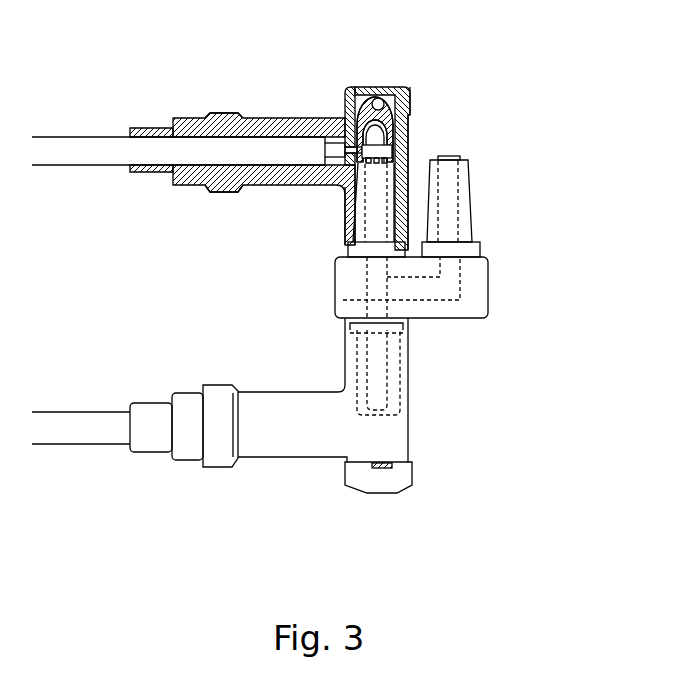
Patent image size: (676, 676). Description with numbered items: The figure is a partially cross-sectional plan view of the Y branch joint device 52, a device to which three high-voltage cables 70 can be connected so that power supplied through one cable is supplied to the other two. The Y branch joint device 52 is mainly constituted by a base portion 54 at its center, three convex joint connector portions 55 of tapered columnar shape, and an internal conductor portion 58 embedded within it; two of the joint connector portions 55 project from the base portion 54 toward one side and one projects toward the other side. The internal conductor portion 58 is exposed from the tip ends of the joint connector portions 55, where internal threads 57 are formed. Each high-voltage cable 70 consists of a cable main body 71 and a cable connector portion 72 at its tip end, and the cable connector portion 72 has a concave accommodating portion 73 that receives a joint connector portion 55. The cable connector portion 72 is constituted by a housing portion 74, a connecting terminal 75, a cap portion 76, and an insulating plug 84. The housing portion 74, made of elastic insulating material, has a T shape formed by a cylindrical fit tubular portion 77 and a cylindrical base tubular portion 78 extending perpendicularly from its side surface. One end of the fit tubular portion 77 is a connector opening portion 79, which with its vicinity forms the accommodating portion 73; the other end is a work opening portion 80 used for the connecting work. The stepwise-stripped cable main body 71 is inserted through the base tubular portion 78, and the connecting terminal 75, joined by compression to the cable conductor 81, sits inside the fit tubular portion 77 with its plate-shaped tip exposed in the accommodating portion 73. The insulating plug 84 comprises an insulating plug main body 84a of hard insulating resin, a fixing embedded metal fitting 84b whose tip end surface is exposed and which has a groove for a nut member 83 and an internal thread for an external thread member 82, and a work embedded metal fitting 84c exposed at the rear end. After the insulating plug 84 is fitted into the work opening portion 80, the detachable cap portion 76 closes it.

The Y branch joint device 52 is at (488, 272).
The base portion 54 is at (487, 297).
The joint connector portion 55 is at (468, 190).
The internal thread 57 is at (342, 203).
The internal conductor portion 58 is at (334, 304).
The high-voltage cable 70 is at (70, 136).
The cable main body 71 is at (91, 145).
The cable connector portion 72 is at (192, 117).
The accommodating portion 73 is at (345, 222).
The housing portion 74 is at (240, 117).
The connecting terminal 75 is at (343, 118).
The cap portion 76 is at (400, 91).
The fit tubular portion 77 is at (409, 97).
The base tubular portion 78 is at (150, 127).
The connector opening portion 79 is at (347, 262).
The work opening portion 80 is at (390, 86).
The cable conductor 81 is at (343, 131).
The external thread member 82 is at (377, 86).
The nut member 83 is at (357, 98).
The insulating plug 84 is at (362, 88).
The insulating plug main body 84a is at (411, 112).
The fixing embedded metal fitting 84b is at (409, 127).
The work embedded metal fitting 84c is at (380, 97).